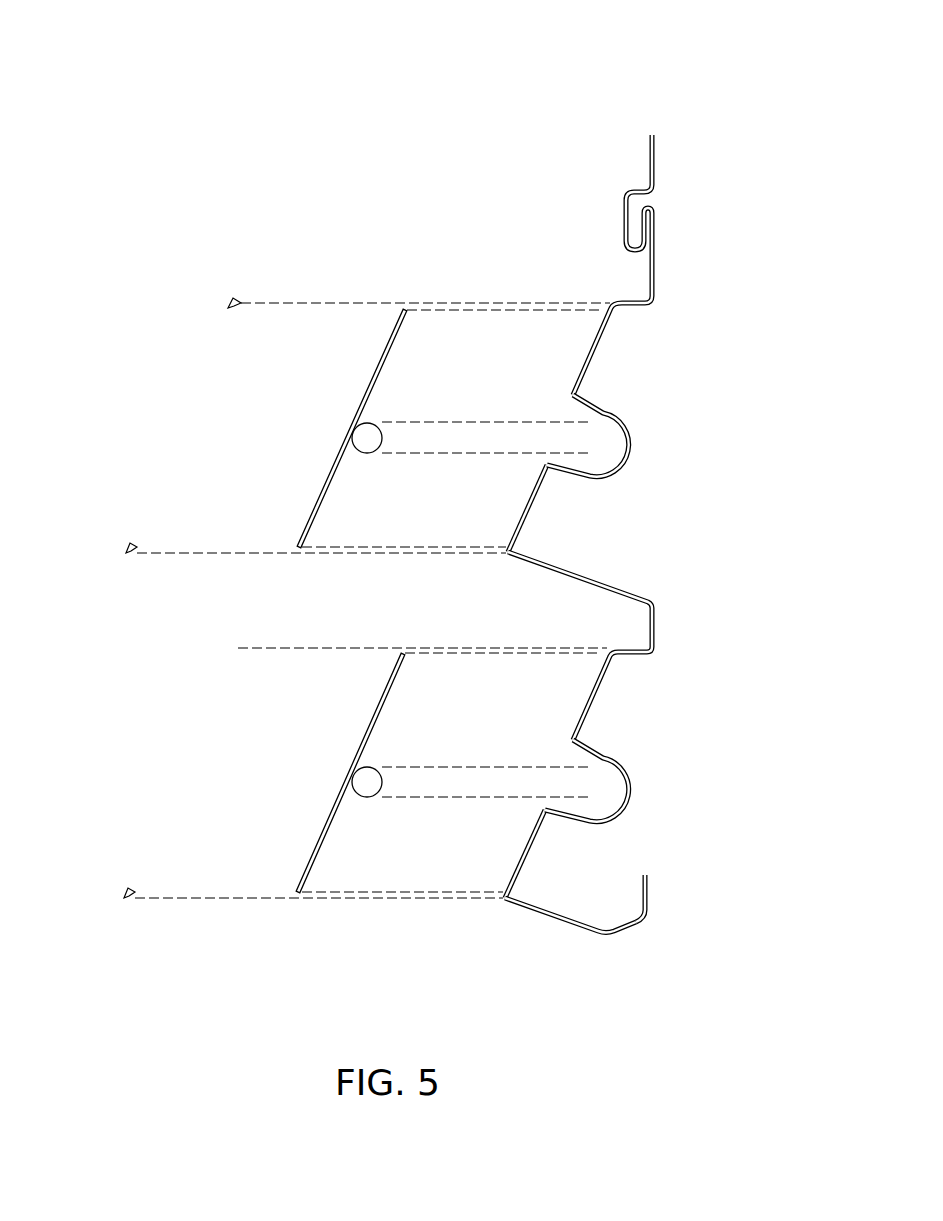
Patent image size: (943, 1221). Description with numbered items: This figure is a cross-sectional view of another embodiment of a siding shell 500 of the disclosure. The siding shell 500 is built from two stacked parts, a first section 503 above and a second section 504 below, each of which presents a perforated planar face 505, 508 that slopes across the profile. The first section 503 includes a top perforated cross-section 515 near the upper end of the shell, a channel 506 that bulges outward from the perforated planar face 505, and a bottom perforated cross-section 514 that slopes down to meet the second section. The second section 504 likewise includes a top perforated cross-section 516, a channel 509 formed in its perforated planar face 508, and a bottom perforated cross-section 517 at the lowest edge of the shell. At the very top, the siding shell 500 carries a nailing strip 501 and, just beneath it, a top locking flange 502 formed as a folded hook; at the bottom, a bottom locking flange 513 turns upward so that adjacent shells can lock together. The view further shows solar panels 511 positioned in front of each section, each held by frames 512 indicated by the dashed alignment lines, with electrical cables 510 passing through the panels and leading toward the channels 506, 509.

The siding shell 500 is at (160, 50).
The nailing strip 501 is at (660, 150).
The top locking flange 502 is at (626, 220).
The first section 503 is at (696, 440).
The second section 504 is at (702, 815).
The perforated planar face 505 is at (613, 322).
The channel 506 is at (612, 462).
The perforated planar face 508 is at (600, 695).
The channel 509 is at (612, 792).
The electrical cables 510 is at (367, 438).
The solar panels 511 is at (306, 522).
The frames 512 is at (233, 298).
The bottom locking flange 513 is at (650, 900).
The bottom perforated cross-section 514 is at (615, 592).
The top perforated cross-section 515 is at (650, 302).
The top perforated cross-section 516 is at (640, 655).
The bottom perforated cross-section 517 is at (556, 928).